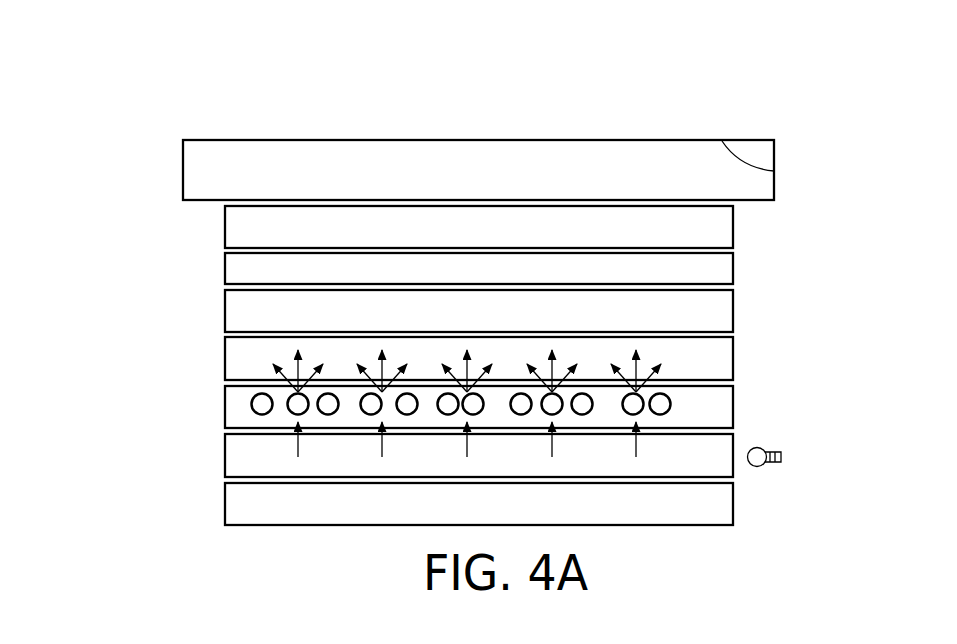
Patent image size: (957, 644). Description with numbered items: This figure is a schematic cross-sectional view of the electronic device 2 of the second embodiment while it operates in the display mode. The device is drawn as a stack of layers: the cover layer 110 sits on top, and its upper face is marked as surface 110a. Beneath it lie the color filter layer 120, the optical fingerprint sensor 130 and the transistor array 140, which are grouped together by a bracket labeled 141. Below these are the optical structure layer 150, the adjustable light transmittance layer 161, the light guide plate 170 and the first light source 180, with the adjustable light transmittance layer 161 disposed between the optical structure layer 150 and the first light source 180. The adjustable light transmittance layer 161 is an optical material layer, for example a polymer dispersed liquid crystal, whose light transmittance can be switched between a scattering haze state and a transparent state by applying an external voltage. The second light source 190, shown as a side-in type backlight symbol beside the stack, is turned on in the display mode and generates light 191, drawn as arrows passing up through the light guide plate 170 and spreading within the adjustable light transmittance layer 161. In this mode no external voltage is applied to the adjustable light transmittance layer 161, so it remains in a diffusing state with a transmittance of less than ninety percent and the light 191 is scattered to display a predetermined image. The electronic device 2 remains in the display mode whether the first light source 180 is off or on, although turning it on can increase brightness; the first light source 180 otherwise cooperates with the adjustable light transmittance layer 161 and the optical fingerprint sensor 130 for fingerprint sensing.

The electronic device 2 is at (732, 116).
The cover layer 110 is at (199, 166).
The outer surface of cover plate 110a is at (774, 171).
The color filter layer 120 is at (243, 230).
The optical fingerprint sensor 130 is at (230, 262).
The transistor array 140 is at (243, 312).
The stacked layer structure 141 is at (88, 213).
The optical structure layer 150 is at (235, 358).
The adjustable light transmittance layer 161 is at (235, 406).
The light guide plate 170 is at (235, 453).
The first light source 180 is at (235, 500).
The second light source 190 is at (783, 456).
The light 191 is at (640, 390).